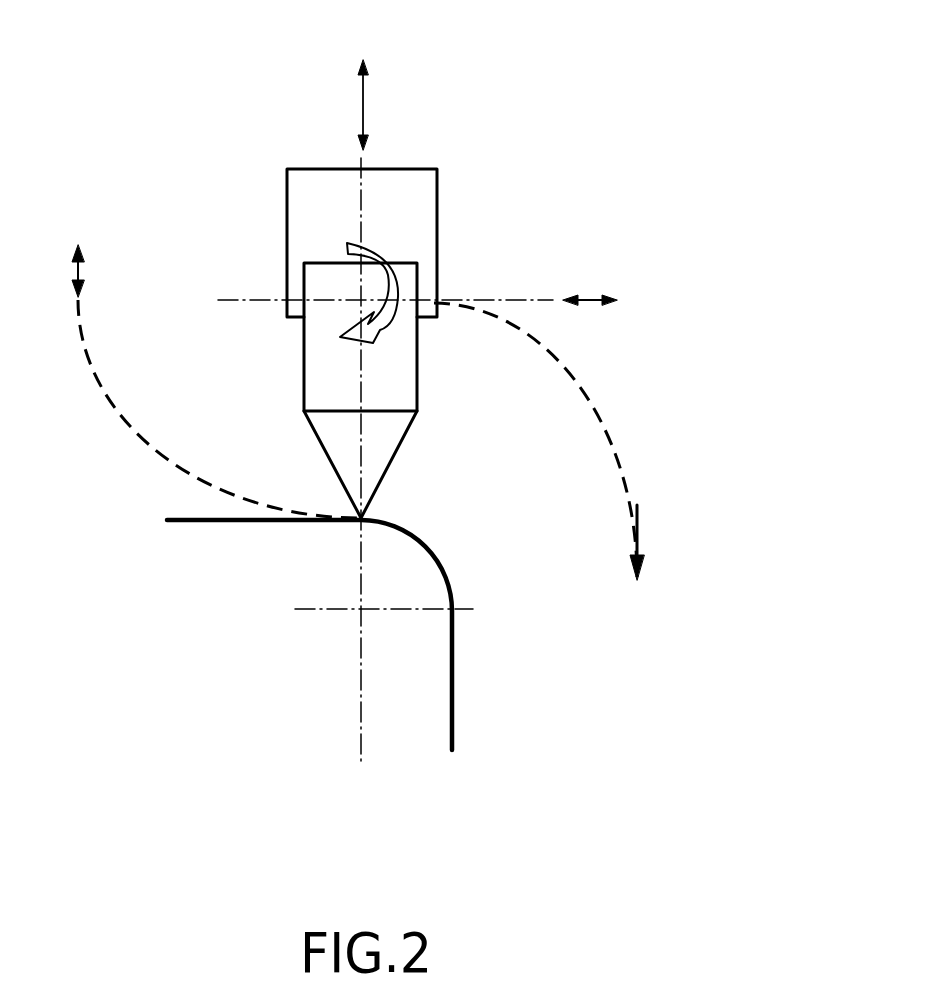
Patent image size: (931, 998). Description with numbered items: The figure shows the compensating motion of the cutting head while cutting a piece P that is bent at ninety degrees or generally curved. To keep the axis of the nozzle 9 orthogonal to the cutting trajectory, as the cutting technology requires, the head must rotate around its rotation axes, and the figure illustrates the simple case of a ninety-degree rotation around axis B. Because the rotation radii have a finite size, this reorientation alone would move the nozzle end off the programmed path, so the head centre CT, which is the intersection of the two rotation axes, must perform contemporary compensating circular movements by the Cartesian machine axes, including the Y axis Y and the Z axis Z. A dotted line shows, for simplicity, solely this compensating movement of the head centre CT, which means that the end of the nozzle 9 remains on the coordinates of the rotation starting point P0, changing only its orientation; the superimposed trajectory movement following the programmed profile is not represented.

The nozzle 9 is at (383, 443).
The head centre CT is at (361, 300).
The Z axis Z is at (363, 110).
The Y axis Y is at (577, 297).
The rotation axis B is at (337, 368).
The rotation starting point P0 is at (361, 518).
The piece P is at (456, 670).